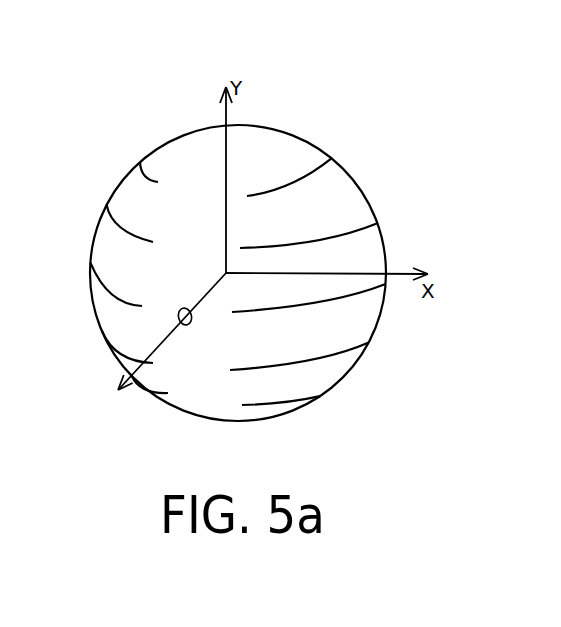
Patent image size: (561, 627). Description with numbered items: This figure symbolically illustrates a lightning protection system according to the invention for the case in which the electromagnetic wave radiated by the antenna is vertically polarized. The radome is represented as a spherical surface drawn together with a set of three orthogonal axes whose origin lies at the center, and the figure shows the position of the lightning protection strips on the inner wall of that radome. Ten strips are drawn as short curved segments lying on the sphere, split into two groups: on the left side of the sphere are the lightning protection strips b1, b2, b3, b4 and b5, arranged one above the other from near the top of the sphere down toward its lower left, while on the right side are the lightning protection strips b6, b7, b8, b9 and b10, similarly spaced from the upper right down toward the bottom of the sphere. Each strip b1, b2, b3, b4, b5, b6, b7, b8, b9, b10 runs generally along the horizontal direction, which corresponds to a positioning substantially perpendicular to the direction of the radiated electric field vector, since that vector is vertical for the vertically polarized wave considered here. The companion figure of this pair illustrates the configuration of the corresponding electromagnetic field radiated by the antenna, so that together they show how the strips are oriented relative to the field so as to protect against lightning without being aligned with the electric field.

The lightning protection strip b1 is at (148, 178).
The lightning protection strip b2 is at (116, 220).
The lightning protection strip b3 is at (101, 281).
The lightning protection strip b4 is at (111, 346).
The lightning protection strip b5 is at (158, 392).
The lightning protection strip b6 is at (324, 168).
The lightning protection strip b7 is at (367, 230).
The lightning protection strip b8 is at (348, 305).
The lightning protection strip b9 is at (328, 362).
The lightning protection strip b10 is at (273, 403).